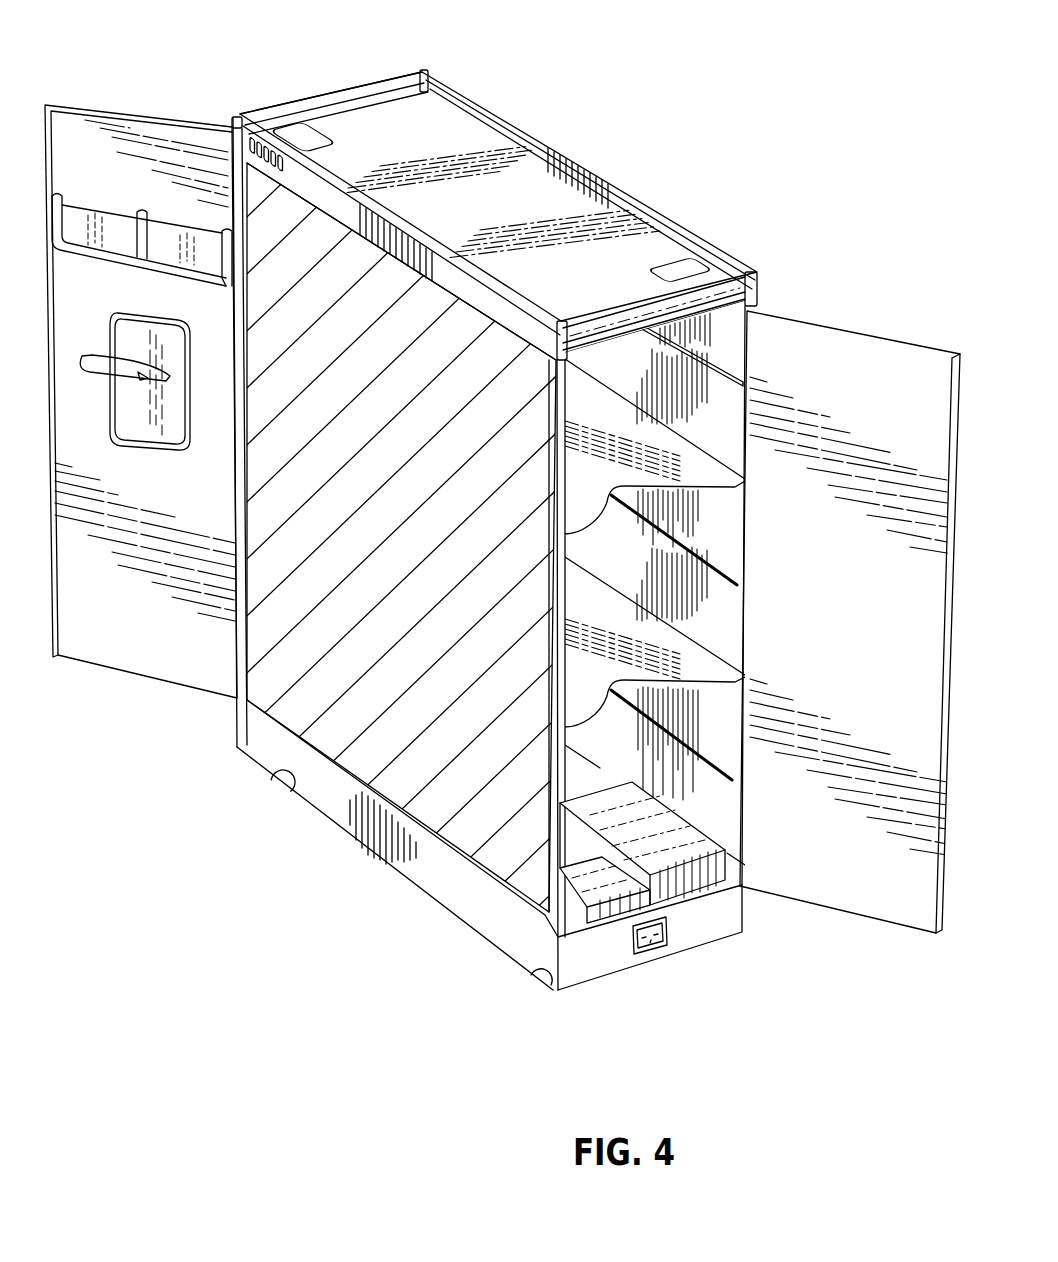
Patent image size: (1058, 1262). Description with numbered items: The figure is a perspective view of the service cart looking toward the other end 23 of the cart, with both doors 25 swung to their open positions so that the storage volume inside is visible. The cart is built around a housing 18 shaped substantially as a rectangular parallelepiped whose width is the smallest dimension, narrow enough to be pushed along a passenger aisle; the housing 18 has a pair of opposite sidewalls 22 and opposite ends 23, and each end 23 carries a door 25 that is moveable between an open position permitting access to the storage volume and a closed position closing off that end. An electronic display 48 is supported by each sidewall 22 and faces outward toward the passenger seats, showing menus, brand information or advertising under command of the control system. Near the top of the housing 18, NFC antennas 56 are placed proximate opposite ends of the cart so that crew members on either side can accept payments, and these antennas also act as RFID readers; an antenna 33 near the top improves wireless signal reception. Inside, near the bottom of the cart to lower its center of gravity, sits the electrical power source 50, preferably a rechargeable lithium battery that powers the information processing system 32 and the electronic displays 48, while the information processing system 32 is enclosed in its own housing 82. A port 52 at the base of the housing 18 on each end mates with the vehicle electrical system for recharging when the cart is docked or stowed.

The housing 18 is at (570, 150).
The sidewall 22 is at (297, 177).
The end 23 is at (337, 96).
The door 25 is at (87, 565).
The information processing system 32 is at (552, 912).
The antenna 33 is at (238, 122).
The electronic display 48 is at (293, 710).
The electrical power source 50 is at (690, 884).
The port 52 is at (669, 938).
The NFC antenna 56 is at (288, 124).
The housing 82 is at (602, 914).